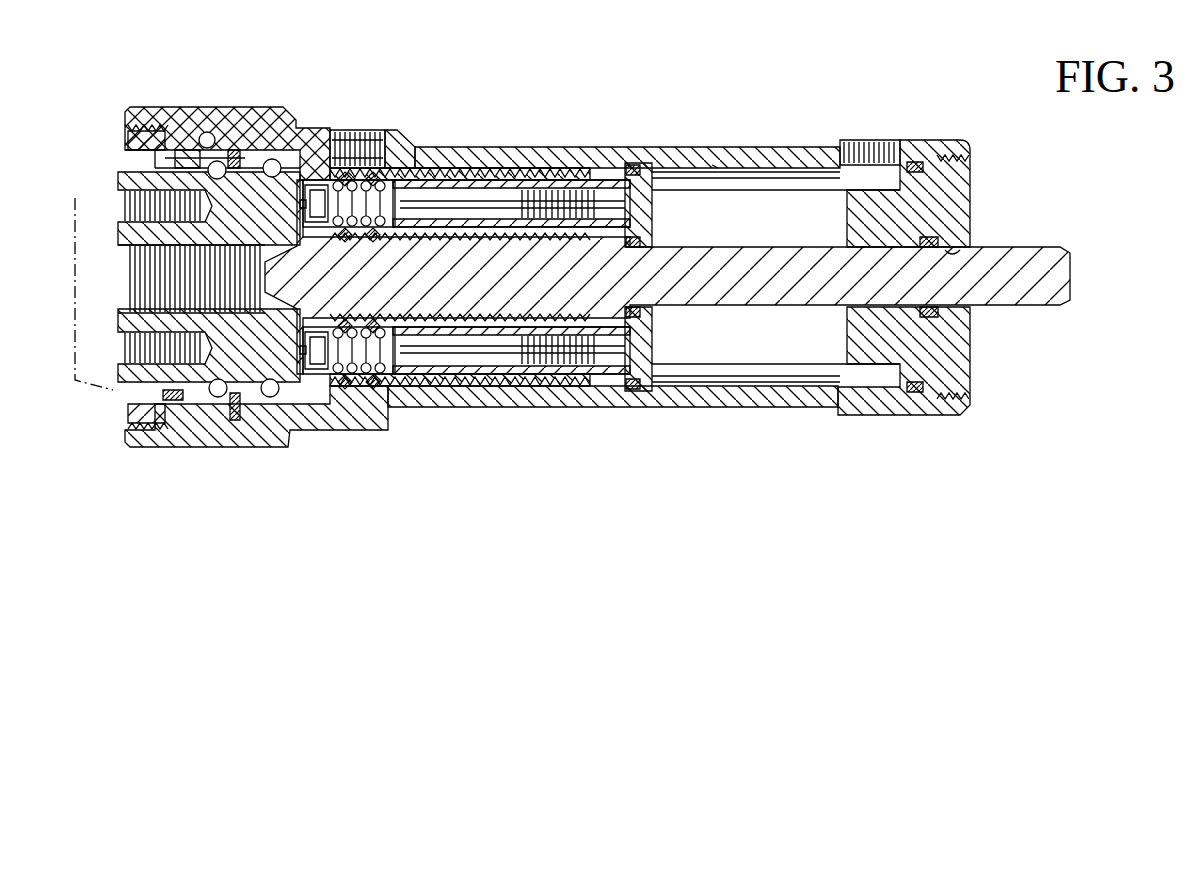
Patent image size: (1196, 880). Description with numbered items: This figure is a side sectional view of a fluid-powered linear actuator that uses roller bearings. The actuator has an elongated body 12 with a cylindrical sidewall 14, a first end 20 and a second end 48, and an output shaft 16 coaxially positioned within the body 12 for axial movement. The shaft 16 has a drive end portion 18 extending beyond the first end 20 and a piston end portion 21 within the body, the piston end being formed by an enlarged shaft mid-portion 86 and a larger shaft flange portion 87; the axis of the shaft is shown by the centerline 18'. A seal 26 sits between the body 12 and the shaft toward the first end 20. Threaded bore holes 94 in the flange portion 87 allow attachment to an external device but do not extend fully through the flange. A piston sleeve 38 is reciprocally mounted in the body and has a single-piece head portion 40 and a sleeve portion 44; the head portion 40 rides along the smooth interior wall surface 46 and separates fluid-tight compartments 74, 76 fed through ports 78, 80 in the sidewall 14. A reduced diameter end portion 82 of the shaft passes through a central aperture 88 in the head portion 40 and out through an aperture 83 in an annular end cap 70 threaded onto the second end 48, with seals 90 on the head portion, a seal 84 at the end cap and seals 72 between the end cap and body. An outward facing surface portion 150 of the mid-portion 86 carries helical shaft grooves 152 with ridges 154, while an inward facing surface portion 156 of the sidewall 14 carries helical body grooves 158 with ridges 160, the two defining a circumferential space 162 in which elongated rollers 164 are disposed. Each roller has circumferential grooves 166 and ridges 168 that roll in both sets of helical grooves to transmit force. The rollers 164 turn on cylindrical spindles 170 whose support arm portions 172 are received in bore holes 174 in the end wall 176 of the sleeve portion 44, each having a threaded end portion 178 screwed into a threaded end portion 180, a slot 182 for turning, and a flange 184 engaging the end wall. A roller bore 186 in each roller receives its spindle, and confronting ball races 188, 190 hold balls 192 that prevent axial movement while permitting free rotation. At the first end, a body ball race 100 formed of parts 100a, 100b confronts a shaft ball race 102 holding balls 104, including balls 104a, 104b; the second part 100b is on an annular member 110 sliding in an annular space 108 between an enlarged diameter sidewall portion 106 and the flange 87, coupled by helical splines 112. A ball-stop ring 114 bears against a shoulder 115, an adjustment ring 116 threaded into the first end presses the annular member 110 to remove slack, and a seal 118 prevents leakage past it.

The body 12 is at (630, 147).
The sidewall 14 is at (668, 150).
The output shaft 16 is at (495, 380).
The drive end portion 18 is at (165, 277).
The fitting centerline 18' is at (68, 294).
The first end 20 is at (125, 110).
The piston end portion 21 is at (350, 265).
The seal 26 is at (160, 140).
The piston sleeve 38 is at (520, 172).
The head portion 40 is at (650, 232).
The sleeve portion 44 is at (570, 170).
The interior wall surface 46 is at (715, 168).
The second end 48 is at (972, 148).
The end cap 70 is at (960, 175).
The seals 72 is at (912, 160).
The fluid-tight compartment 74 is at (450, 168).
The fluid-tight compartment 76 is at (760, 175).
The port 78 is at (392, 132).
The port 80 is at (850, 145).
The reduced diameter end portion 82 is at (1015, 262).
The aperture 83 is at (952, 252).
The seal 84 is at (935, 245).
The shaft mid-portion 86 is at (560, 375).
The shaft flange portion 87 is at (250, 380).
The central aperture 88 is at (655, 252).
The seals 90 is at (640, 310).
The bore holes 94 is at (125, 205).
The body ball race 100 is at (290, 124).
The first ball race part 100a is at (262, 150).
The second ball race part 100b is at (220, 180).
The shaft ball race 102 is at (265, 178).
The balls 104 is at (195, 408).
The ball 104a is at (350, 134).
The ball 104b is at (185, 172).
The enlarged diameter interior sidewall portion 106 is at (190, 140).
The annular space 108 is at (128, 160).
The annular member 110 is at (207, 132).
The helical splines 112 is at (230, 150).
The ball-stop ring 114 is at (232, 420).
The shoulder 115 is at (240, 150).
The adjustment ring 116 is at (125, 134).
The seal 118 is at (200, 145).
The outward facing surface portion 150 is at (560, 240).
The helical shaft grooves 152 is at (500, 240).
The helical ridges 154 is at (465, 238).
The inward facing surface portion 156 is at (555, 160).
The helical body grooves 158 is at (478, 170).
The helical ridges 160 is at (520, 178).
The circumferential space 162 is at (636, 210).
The rollers 164 is at (395, 208).
The circumferential grooves 166 is at (365, 158).
The circumferential ridges 168 is at (360, 172).
The spindles 170 is at (440, 346).
The support arm portion 172 is at (525, 380).
The bore holes 174 is at (455, 380).
The end wall 176 is at (405, 385).
The threaded end portion 178 is at (590, 385).
The threaded end portion 180 is at (545, 370).
The slot 182 is at (300, 400).
The flange 184 is at (400, 382).
The roller bore 186 is at (330, 380).
The ball races 188 is at (340, 332).
The ball races 190 is at (305, 328).
The balls 192 is at (335, 226).